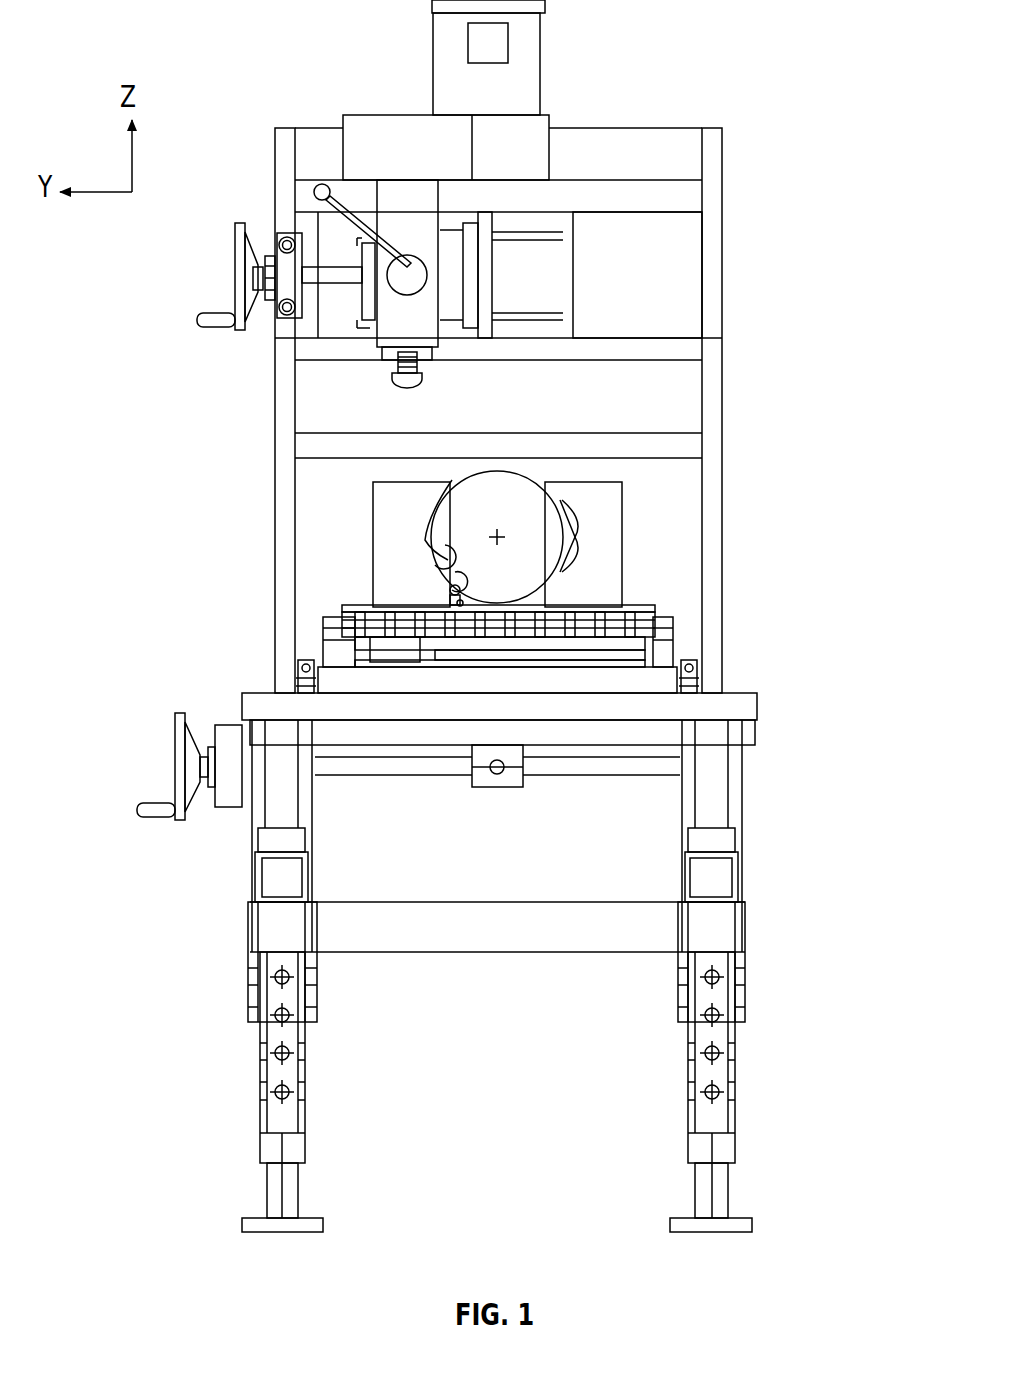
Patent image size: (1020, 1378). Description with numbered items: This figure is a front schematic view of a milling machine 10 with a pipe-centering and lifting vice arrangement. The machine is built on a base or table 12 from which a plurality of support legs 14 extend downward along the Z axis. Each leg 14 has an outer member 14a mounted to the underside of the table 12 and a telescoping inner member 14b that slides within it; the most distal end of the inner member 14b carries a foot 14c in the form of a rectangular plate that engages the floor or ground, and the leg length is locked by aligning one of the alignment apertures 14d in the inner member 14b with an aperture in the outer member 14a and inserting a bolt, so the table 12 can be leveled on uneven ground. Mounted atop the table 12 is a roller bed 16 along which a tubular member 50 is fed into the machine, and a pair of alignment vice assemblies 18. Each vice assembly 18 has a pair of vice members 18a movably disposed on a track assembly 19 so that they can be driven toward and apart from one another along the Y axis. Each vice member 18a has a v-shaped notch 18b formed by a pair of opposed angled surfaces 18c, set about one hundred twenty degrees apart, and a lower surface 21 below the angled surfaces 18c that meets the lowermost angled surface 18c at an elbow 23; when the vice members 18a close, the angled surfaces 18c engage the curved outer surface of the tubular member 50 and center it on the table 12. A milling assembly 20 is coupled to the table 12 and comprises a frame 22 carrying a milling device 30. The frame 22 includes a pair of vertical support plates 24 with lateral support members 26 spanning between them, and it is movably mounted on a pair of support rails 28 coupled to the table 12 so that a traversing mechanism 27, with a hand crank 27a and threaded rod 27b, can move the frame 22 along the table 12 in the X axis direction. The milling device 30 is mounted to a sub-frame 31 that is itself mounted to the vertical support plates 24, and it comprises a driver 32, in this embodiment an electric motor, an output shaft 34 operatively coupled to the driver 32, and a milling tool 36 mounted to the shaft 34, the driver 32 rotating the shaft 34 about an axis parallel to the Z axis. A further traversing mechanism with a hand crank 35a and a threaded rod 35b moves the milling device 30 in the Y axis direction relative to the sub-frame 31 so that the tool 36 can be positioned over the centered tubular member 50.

The milling machine 10 is at (735, 75).
The base (table) 12 is at (751, 693).
The support legs 14 is at (246, 937).
The outer member 14a is at (745, 823).
The inner member 14b is at (688, 1073).
The foot (engagement member) 14c is at (737, 1218).
The alignment apertures 14d is at (706, 984).
The roller bed 16 is at (682, 618).
The alignment vice assemblies 18 is at (325, 515).
The vice members 18a is at (610, 497).
The v-shaped notch 18b is at (445, 524).
The angled surfaces 18c is at (466, 494).
The track assembly 19 is at (646, 605).
The milling assembly 20 is at (746, 321).
The lower surface 21 is at (458, 597).
The frame 22 is at (272, 586).
The elbow 23 is at (455, 594).
The vertical support plates 24 is at (275, 160).
The lateral support members 26 is at (678, 433).
The traversing mechanism 27 is at (342, 790).
The hand crank 27a is at (158, 803).
The threaded rod 27b is at (497, 775).
The support rails 28 is at (298, 672).
The milling device 30 is at (356, 93).
The sub-frame 31 is at (618, 180).
The driver 32 is at (541, 30).
The output shaft 34 is at (397, 365).
The hand crank 35a is at (228, 316).
The threaded rod 35b is at (335, 285).
The milling tool 36 is at (396, 382).
The tubular member 50 is at (576, 537).